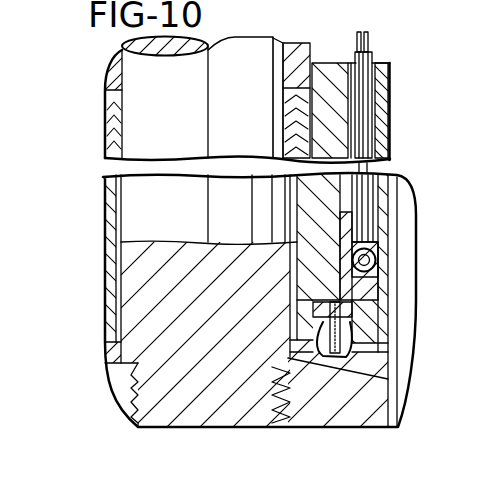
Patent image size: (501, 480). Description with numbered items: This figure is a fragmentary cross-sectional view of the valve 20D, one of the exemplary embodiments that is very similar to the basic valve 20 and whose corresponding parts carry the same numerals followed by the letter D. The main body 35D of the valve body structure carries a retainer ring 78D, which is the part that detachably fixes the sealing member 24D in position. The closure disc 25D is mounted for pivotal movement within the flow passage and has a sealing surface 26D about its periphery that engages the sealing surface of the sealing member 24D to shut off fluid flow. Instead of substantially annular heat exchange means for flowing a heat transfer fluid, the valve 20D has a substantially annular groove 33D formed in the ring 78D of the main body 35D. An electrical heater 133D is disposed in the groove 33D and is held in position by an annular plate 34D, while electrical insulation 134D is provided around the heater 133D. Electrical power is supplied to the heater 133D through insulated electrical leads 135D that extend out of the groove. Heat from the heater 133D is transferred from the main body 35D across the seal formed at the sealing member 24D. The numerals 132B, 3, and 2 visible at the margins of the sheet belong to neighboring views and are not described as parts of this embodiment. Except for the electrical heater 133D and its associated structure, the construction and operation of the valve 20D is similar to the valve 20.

The valve 20D is at (96, 132).
The plug member 132B is at (226, 79).
The insulated electrical leads 135D is at (364, 96).
The main body 35D is at (396, 124).
The valve 20 is at (487, 73).
The partial numeral 3 is at (494, 187).
The partial numeral 2 is at (494, 443).
The closure disc 25D is at (342, 422).
The electrical heater 133D is at (386, 229).
The electrical insulation 134D is at (350, 257).
The annular plate 34D is at (380, 255).
The annular groove 33D is at (389, 289).
The retainer ring 78D is at (382, 312).
The sealing member 24D is at (318, 337).
The sealing surface 26D is at (386, 346).